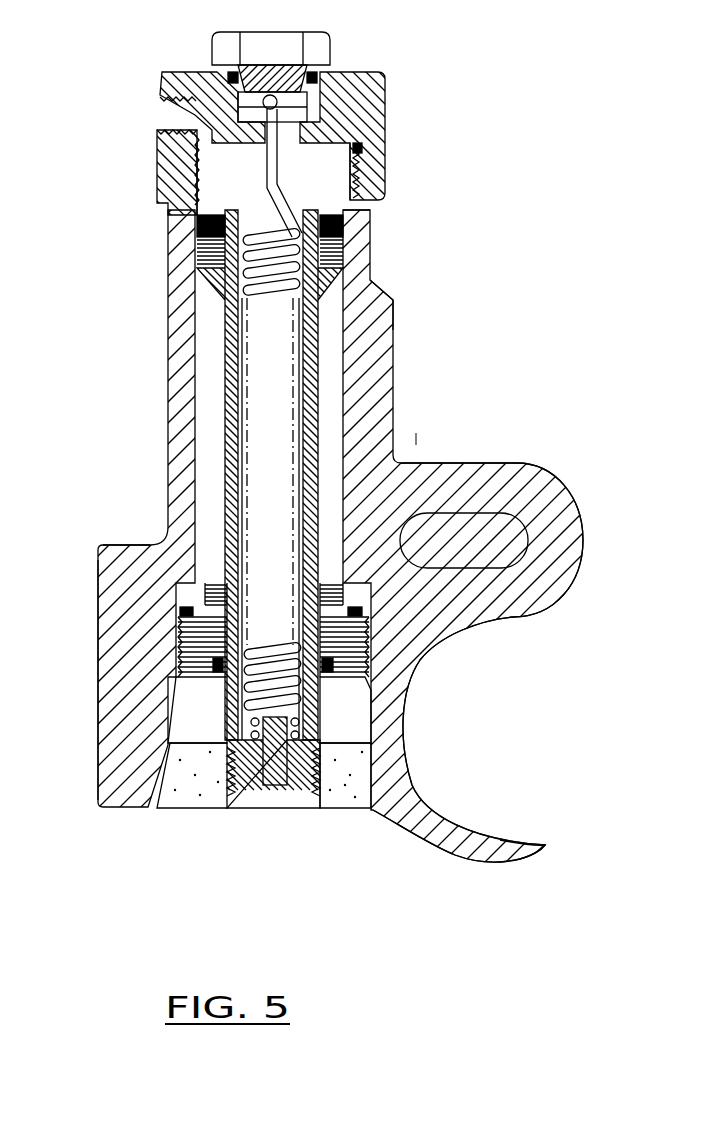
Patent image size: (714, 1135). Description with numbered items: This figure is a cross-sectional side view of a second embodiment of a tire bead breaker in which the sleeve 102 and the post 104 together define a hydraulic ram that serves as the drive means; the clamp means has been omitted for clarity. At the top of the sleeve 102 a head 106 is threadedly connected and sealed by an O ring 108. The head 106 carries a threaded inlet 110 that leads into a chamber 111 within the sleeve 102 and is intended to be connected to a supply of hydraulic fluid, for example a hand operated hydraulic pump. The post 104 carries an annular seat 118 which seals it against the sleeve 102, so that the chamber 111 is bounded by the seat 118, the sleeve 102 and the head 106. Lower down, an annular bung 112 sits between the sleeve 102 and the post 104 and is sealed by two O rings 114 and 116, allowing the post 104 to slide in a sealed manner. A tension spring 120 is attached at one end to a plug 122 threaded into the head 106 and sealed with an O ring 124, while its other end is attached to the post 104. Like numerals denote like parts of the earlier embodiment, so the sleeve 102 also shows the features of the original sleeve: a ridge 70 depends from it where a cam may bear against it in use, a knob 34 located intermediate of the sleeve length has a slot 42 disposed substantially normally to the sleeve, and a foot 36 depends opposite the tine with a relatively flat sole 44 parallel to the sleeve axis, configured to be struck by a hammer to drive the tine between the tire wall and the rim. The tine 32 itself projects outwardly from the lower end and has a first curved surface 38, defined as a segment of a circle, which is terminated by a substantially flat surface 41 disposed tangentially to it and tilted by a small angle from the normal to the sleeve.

The plug 122 is at (292, 33).
The O ring 124 is at (318, 78).
The threaded inlet 110 is at (165, 103).
The head 106 is at (418, 112).
The O ring 108 is at (362, 148).
The chamber 111 is at (252, 189).
The annular seat 118 is at (332, 222).
The ridge 70 is at (385, 316).
The sleeve 102 is at (168, 460).
The knob 34 is at (545, 470).
The foot 36 is at (99, 546).
The slot 42 is at (480, 553).
The tension spring 120 is at (290, 527).
The O ring 114 is at (347, 605).
The sole 44 is at (100, 712).
The O ring 116 is at (218, 672).
The annular bung 112 is at (343, 674).
The post 104 is at (197, 810).
The first curved surface 38 is at (420, 790).
The flat surface 41 is at (527, 840).
The tine 32 is at (524, 865).